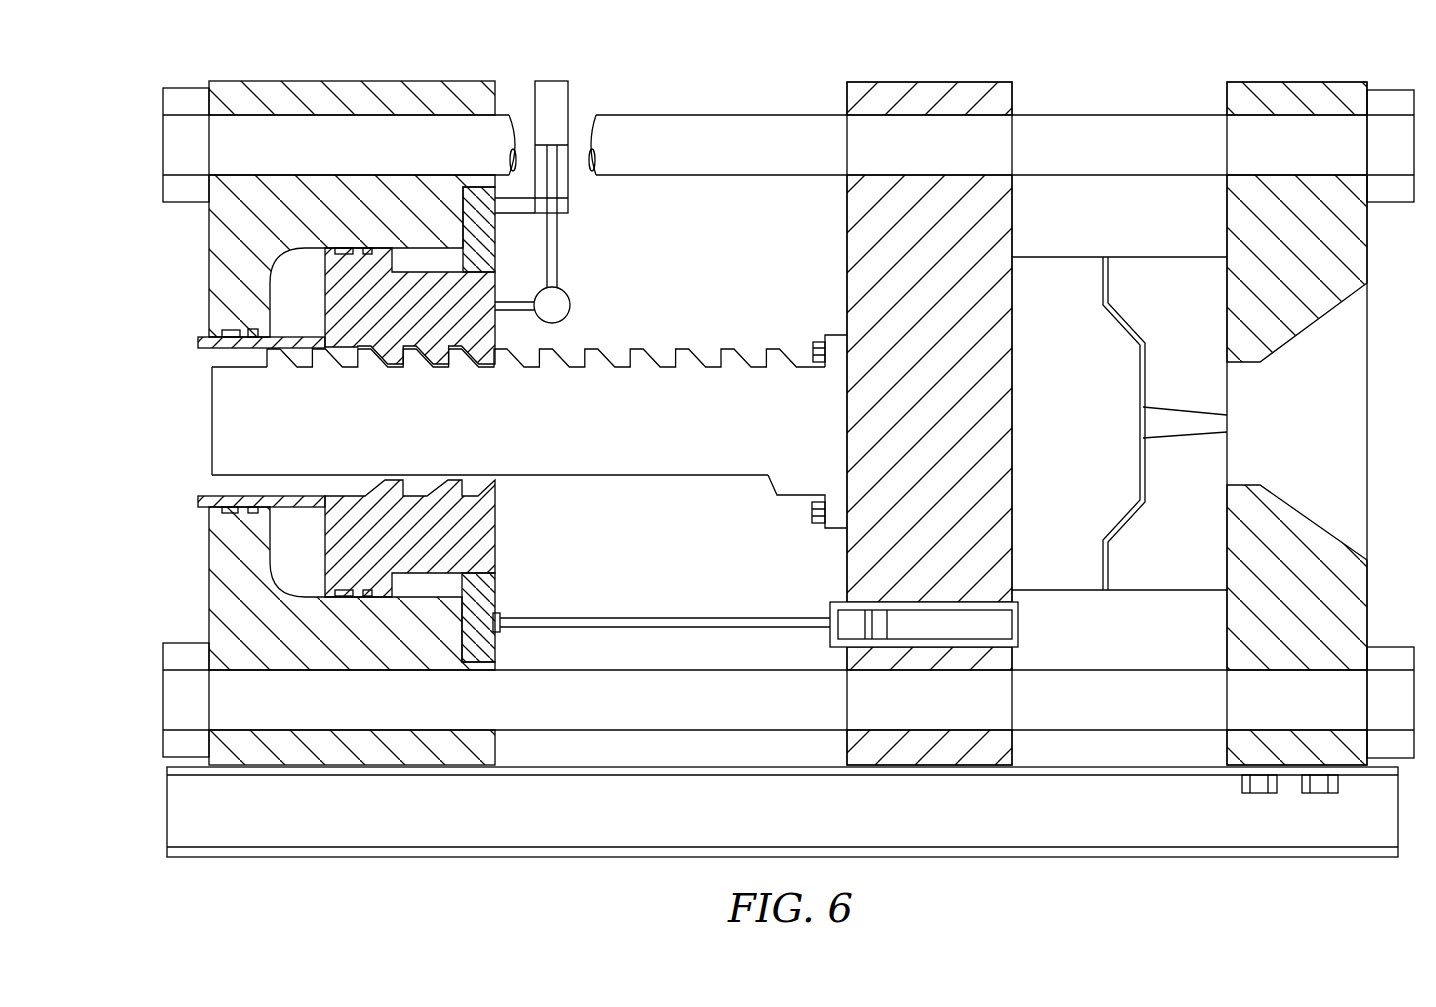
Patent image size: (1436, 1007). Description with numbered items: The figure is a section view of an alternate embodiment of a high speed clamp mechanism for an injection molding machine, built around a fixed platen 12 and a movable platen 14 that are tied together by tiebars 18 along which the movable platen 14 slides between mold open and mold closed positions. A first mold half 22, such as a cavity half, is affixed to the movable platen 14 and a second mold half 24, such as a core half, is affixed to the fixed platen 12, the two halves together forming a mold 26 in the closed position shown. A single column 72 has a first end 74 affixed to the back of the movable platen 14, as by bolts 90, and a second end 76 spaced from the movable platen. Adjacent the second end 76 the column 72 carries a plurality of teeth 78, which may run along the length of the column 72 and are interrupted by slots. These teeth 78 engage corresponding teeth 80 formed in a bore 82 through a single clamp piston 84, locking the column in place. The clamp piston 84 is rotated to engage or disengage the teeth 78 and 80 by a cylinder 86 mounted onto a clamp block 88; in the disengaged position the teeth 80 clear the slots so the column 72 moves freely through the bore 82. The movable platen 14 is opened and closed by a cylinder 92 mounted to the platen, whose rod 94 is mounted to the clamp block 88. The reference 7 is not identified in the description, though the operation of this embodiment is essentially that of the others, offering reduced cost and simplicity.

The movable platen 7 is at (866, 234).
The fixed platen 12 is at (1357, 253).
The movable platen 14 is at (993, 172).
The tiebars 18 is at (740, 128).
The first mold half 22 is at (1037, 273).
The second mold half 24 is at (1163, 268).
The mold 26 is at (1140, 388).
The column 72 is at (693, 382).
The first end 74 is at (815, 472).
The second end 76 is at (210, 393).
The teeth 78 is at (641, 355).
The teeth 80 is at (478, 485).
The bore 82 is at (417, 483).
The clamp piston 84 is at (475, 552).
The cylinder 86 is at (553, 98).
The clamp block 88 is at (227, 270).
The bolts 90 is at (822, 338).
The cylinders 92 is at (997, 628).
The rod 94 is at (650, 620).